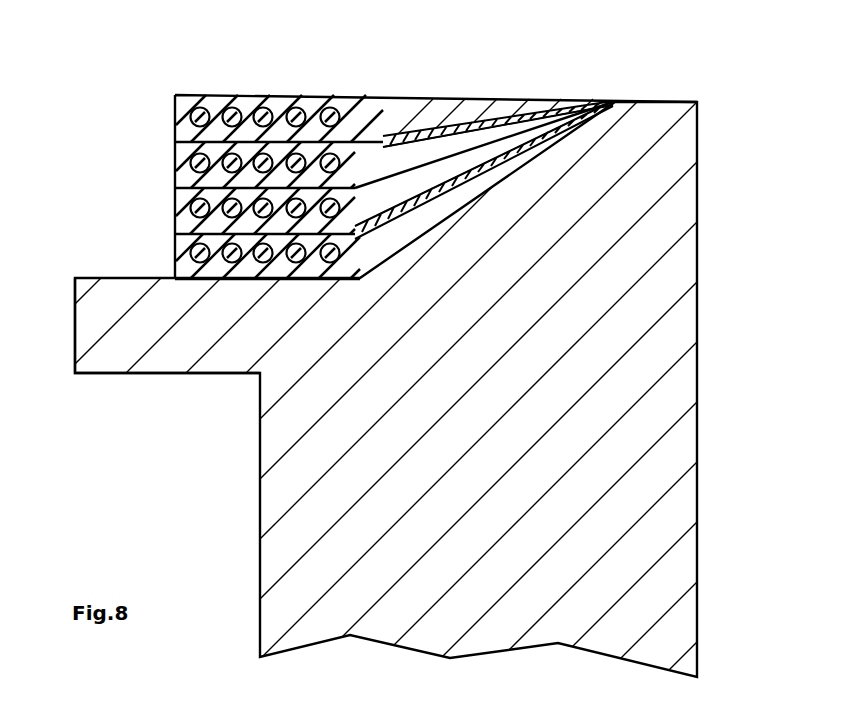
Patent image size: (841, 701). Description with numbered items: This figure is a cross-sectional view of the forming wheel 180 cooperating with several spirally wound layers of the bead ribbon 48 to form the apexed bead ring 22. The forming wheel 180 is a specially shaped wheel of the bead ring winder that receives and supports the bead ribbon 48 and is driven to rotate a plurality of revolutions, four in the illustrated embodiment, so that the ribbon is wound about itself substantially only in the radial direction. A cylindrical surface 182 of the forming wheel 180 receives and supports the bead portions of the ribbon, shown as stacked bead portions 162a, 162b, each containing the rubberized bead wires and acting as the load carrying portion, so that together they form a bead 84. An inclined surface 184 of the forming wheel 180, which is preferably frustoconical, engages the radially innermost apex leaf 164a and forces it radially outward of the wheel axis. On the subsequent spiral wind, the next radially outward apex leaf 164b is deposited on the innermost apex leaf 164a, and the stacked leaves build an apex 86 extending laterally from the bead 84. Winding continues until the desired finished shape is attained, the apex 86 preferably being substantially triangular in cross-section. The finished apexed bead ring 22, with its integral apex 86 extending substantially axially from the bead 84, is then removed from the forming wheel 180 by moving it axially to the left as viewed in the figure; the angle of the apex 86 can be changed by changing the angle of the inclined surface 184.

The apexed bead ring 22 is at (340, 84).
The bead ribbon 48 is at (222, 152).
The bead 84 is at (188, 150).
The apex 86 is at (478, 88).
The bead portion 162a is at (178, 262).
The bead portion 162b is at (183, 208).
The radially innermost apex leaf 164a is at (468, 187).
The next radially outward apex leaf 164b is at (490, 148).
The forming wheel 180 is at (540, 385).
The cylindrical surface 182 is at (136, 276).
The inclined surface 184 is at (490, 152).